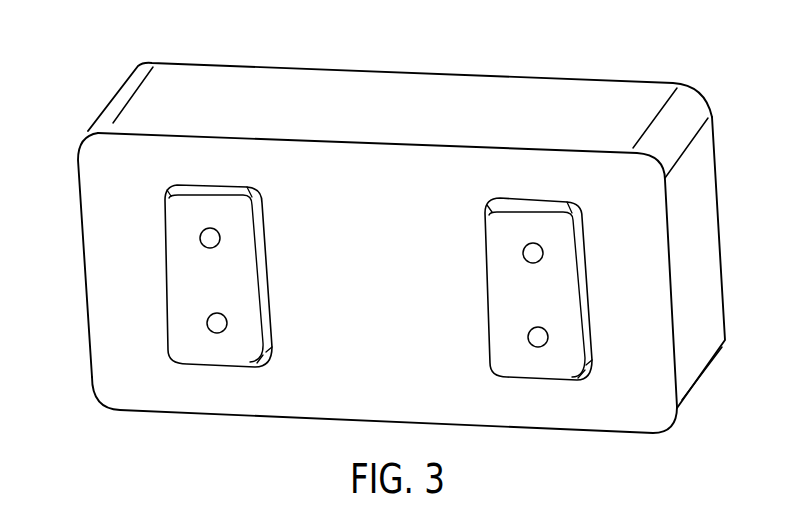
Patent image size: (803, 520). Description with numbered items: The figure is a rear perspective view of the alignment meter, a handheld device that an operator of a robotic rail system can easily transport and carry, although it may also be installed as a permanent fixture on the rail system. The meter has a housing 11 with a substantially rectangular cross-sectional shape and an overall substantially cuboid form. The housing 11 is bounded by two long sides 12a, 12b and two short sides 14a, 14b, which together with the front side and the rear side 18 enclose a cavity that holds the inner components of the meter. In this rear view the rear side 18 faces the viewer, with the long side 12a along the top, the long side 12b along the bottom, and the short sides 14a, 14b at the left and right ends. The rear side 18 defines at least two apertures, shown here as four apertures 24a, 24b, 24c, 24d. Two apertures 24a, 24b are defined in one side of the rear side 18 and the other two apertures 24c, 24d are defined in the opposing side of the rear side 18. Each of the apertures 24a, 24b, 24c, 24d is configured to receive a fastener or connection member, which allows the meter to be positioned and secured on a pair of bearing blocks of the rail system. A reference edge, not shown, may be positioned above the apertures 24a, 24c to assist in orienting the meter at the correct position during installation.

The housing 11 is at (399, 257).
The long side 12a is at (278, 80).
The long side 12b is at (568, 430).
The short side 14a is at (87, 290).
The short side 14b is at (712, 255).
The rear side 18 is at (387, 295).
The aperture 24a is at (221, 237).
The aperture 24b is at (228, 321).
The aperture 24c is at (544, 251).
The aperture 24d is at (549, 335).